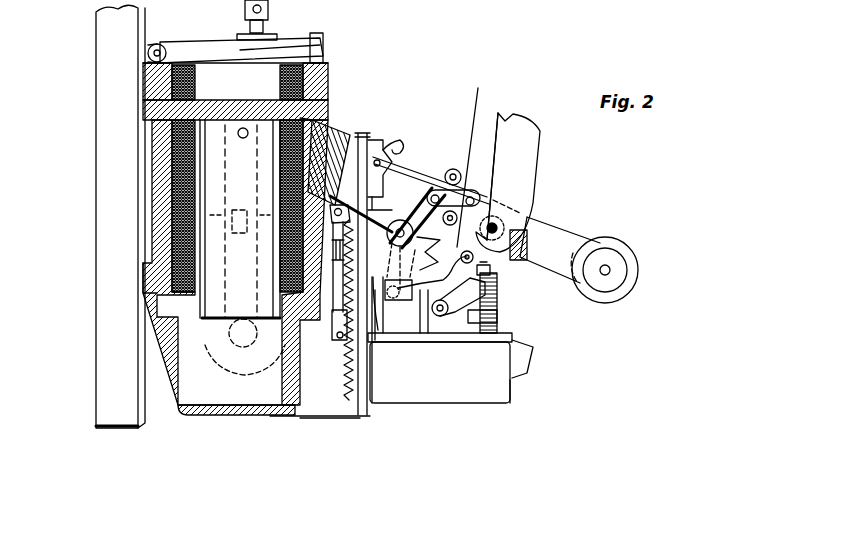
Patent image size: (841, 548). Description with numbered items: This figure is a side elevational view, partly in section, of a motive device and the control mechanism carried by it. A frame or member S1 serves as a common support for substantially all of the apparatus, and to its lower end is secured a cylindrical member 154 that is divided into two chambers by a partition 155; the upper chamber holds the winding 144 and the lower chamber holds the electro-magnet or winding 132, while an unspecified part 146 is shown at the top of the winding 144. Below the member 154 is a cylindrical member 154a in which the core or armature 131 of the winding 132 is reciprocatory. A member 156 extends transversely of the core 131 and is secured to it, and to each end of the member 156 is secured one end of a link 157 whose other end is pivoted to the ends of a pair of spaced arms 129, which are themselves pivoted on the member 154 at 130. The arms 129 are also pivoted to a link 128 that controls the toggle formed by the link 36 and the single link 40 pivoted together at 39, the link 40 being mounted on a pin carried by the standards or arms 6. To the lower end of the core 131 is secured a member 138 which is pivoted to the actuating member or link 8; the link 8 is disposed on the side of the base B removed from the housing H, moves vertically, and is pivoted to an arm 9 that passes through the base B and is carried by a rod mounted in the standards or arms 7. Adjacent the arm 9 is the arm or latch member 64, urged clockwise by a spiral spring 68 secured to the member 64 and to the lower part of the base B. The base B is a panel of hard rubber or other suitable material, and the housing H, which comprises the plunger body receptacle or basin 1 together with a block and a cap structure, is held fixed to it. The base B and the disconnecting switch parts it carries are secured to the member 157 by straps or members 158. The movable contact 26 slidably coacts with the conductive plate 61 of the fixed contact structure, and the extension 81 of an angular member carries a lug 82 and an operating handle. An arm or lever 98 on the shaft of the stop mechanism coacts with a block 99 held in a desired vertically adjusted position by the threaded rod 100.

The frame or member S1 is at (110, 375).
The electro-magnet or winding 132 is at (168, 190).
The partition 155 is at (165, 113).
The cylindrical member 154 is at (165, 248).
The member 156 is at (162, 222).
The core or armature 131 is at (165, 285).
The link 157 is at (215, 340).
The cylindrical member 154a is at (183, 393).
The winding 144 is at (185, 62).
The adjusting bolt 146 is at (292, 48).
The pivot 130 is at (315, 122).
The standards or arms 7 is at (373, 345).
The spiral spring 68 is at (347, 383).
The member 138 is at (308, 407).
The actuating member or link 8 is at (343, 337).
The straps or members 158 is at (320, 420).
The base or panel B is at (363, 410).
The arm 9 is at (381, 178).
The conductive plate 61 is at (396, 141).
The spaced arms 129 is at (422, 167).
The arm or latch member 64 is at (433, 211).
The movable contact 26 is at (455, 170).
The link 36 is at (474, 155).
The link 128 is at (525, 152).
The pivot 39 is at (508, 138).
The single link 40 is at (467, 207).
The standards or arms 6 is at (530, 250).
The threaded rod 100 is at (497, 290).
The block 99 is at (497, 318).
The arm or lever 98 is at (455, 302).
The extension 81 is at (420, 292).
The lug 82 is at (430, 297).
The plunger body receptacle or basin 1 is at (487, 395).
The housing H is at (516, 380).